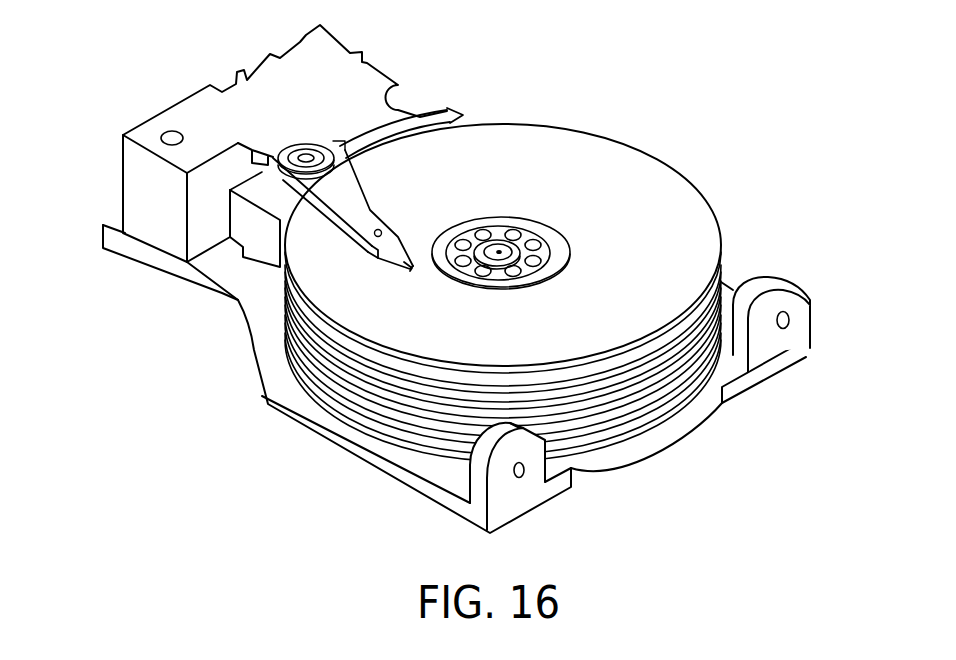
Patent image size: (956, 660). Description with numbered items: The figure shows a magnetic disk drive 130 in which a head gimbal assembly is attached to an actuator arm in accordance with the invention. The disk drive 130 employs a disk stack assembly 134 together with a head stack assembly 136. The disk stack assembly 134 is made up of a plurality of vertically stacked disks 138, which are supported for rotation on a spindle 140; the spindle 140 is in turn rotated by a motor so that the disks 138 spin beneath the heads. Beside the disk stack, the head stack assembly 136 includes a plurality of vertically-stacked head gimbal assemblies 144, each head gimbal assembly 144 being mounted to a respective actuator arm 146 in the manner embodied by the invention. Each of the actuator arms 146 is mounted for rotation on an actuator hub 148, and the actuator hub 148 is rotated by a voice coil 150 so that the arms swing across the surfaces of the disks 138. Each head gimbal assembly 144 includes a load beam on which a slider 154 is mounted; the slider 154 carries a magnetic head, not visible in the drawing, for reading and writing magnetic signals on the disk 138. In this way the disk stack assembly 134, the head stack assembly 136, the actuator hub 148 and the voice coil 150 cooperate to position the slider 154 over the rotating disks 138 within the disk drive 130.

The disk drive 130 is at (732, 175).
The disk stack assembly 134 is at (630, 150).
The head stack assembly 136 is at (280, 188).
The disks 138 is at (660, 387).
The spindle 140 is at (517, 240).
The head gimbal assemblies 144 is at (410, 245).
The actuator arm 146 is at (365, 208).
The actuator hub 148 is at (318, 119).
The voice coil 150 is at (258, 66).
The slider 154 is at (411, 270).